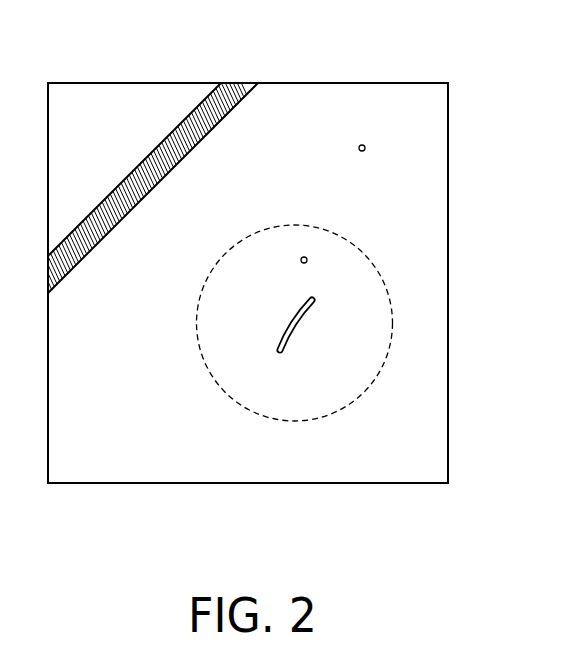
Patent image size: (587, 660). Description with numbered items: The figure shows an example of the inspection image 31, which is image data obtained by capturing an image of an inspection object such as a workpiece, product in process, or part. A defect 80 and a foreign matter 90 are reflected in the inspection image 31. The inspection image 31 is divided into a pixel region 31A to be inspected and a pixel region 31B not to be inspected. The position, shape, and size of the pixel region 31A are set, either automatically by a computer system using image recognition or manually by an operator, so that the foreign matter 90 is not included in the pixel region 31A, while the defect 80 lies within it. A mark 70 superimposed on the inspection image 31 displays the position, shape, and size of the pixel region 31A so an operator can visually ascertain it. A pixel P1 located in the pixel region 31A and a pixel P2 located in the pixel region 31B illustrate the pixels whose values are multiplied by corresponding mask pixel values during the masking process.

The inspection image 31 is at (260, 330).
The pixel region to be inspected 31A is at (312, 368).
The pixel region not to be inspected 31B is at (280, 460).
The mark 70 is at (377, 267).
The defect 80 is at (305, 317).
The foreign matter 90 is at (180, 125).
The pixel P1 is at (323, 260).
The pixel P2 is at (381, 150).